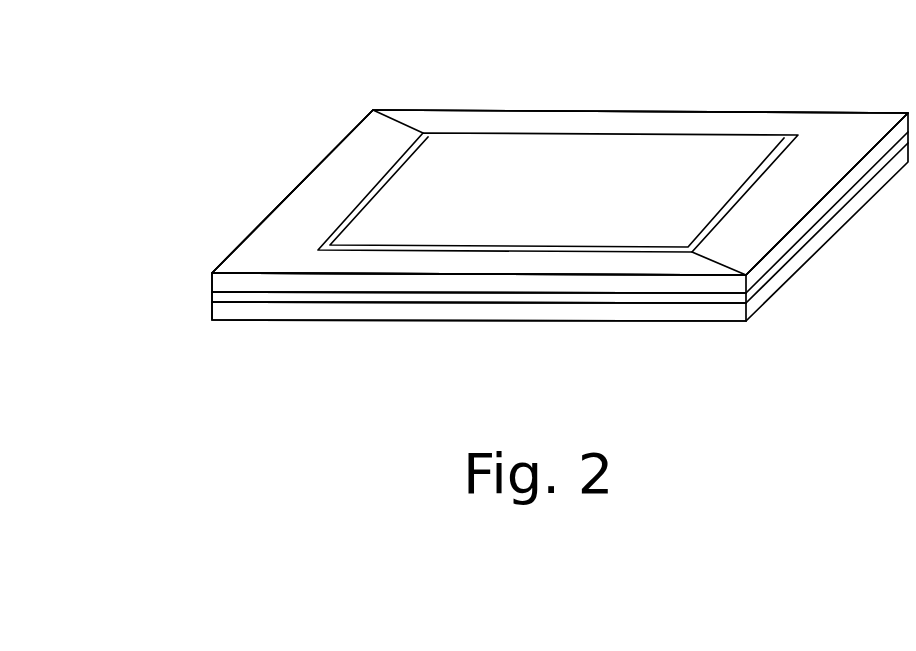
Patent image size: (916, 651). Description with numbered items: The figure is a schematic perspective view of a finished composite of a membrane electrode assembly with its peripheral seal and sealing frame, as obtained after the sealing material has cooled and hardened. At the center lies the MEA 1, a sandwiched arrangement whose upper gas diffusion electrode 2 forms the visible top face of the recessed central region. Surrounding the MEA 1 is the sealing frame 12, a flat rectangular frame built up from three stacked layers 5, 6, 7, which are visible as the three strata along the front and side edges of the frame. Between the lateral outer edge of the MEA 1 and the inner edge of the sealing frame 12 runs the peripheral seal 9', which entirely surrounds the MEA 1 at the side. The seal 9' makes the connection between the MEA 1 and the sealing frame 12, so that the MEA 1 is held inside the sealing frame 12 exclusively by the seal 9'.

The MEA 1 is at (545, 165).
The gas diffusion electrode 2 is at (665, 161).
The peripheral seal 9' is at (460, 156).
The sealing frame 12 is at (297, 233).
The layer 5 is at (222, 280).
The layer 6 is at (220, 298).
The layer 7 is at (222, 313).